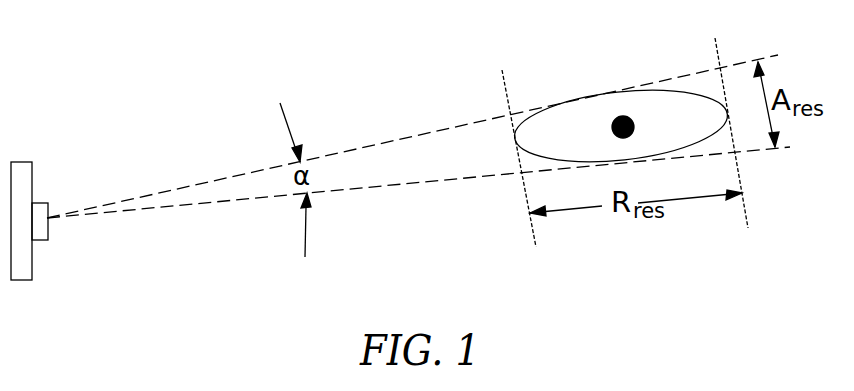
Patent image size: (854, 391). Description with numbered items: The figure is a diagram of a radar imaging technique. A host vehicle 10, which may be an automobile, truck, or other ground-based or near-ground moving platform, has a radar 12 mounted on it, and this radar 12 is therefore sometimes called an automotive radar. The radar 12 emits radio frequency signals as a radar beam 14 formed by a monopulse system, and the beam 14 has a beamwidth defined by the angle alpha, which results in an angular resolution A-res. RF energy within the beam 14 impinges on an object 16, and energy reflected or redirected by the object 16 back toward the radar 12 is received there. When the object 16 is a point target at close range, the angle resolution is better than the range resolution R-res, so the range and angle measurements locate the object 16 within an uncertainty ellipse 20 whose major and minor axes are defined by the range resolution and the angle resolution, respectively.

The host vehicle 10 is at (22, 170).
The radar 12 is at (42, 208).
The radar beam 14 is at (415, 132).
The object 16 is at (618, 117).
The uncertainty ellipse 20 is at (678, 92).